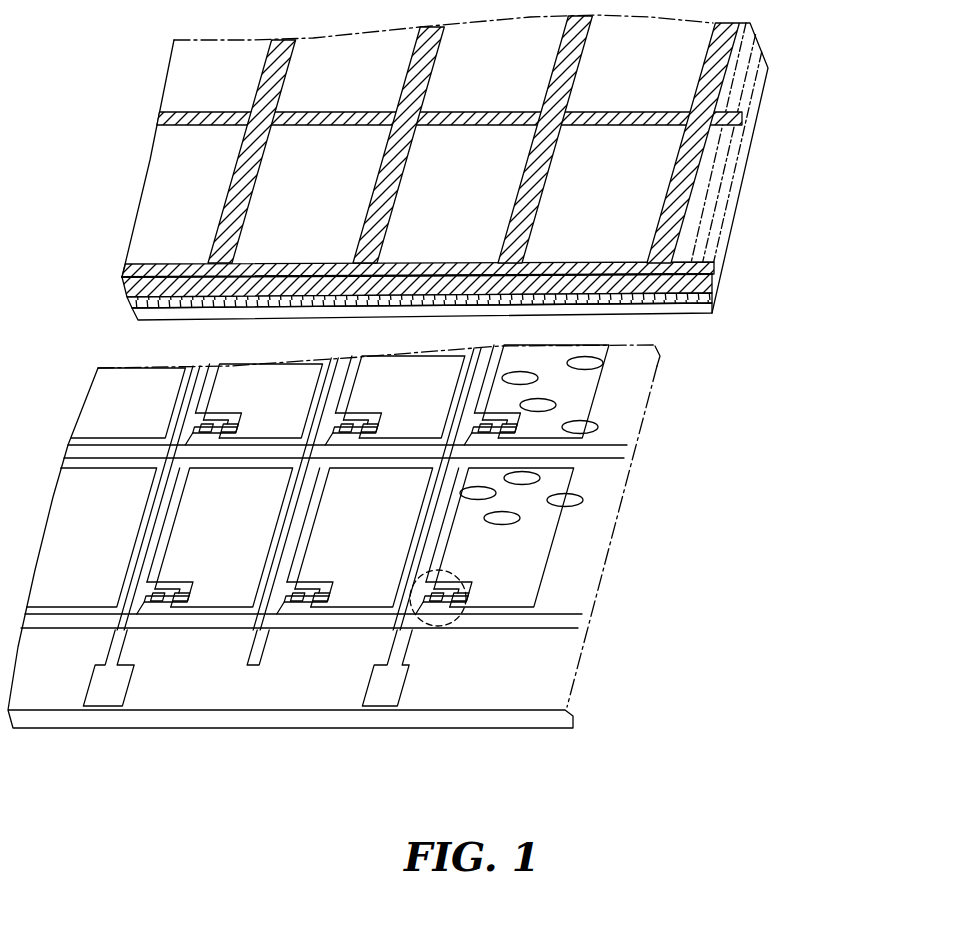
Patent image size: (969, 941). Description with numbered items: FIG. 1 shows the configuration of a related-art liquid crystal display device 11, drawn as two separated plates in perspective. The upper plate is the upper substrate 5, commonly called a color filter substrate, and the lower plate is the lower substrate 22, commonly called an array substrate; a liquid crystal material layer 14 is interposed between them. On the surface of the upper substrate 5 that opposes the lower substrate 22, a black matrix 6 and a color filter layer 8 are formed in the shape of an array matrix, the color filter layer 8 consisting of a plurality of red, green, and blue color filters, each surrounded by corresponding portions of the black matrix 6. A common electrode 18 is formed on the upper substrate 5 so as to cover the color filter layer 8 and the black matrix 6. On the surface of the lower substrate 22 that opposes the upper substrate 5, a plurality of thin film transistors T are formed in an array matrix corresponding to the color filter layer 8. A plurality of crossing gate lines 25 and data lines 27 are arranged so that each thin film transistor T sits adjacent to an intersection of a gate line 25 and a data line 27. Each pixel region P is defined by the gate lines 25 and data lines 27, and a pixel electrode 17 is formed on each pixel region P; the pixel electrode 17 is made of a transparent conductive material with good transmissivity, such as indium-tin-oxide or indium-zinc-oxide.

The color filter layer 8 is at (682, 77).
The black matrix 6 is at (747, 118).
The upper substrate 5 is at (702, 285).
The common electrode 18 is at (695, 312).
The liquid crystal material layer 14 is at (573, 422).
The pixel electrode 17 is at (540, 580).
The pixel region P is at (565, 624).
The LCD device 11 is at (446, 573).
The lower substrate 22 is at (533, 718).
The gate line 25 is at (547, 623).
The data line 27 is at (387, 653).
The thin film transistor T is at (453, 622).